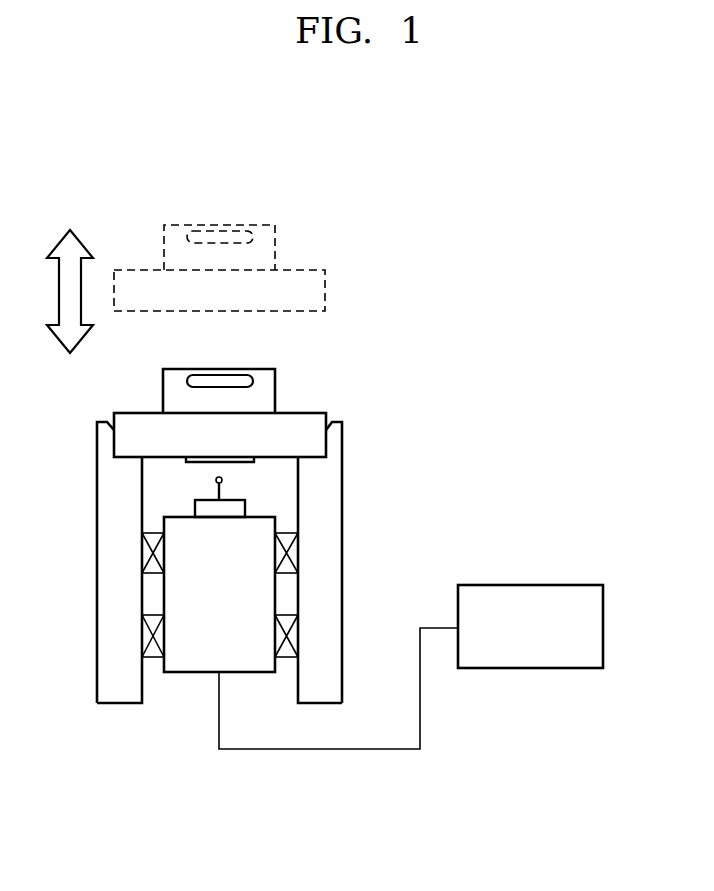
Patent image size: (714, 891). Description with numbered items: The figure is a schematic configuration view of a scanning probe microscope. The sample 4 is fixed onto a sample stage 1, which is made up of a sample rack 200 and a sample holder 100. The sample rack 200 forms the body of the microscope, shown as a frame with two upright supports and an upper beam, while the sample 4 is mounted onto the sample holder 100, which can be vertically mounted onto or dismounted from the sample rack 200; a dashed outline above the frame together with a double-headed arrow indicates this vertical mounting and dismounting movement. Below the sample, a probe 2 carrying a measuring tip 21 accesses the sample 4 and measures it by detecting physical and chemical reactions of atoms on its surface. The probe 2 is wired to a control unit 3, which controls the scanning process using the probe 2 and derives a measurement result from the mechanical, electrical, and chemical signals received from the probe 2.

The sample stage 1 is at (272, 536).
The sample holder 100 is at (326, 441).
The sample rack 200 is at (342, 468).
The probe 2 is at (245, 508).
The measuring tip 21 is at (222, 481).
The control unit 3 is at (535, 585).
The sample 4 is at (253, 463).